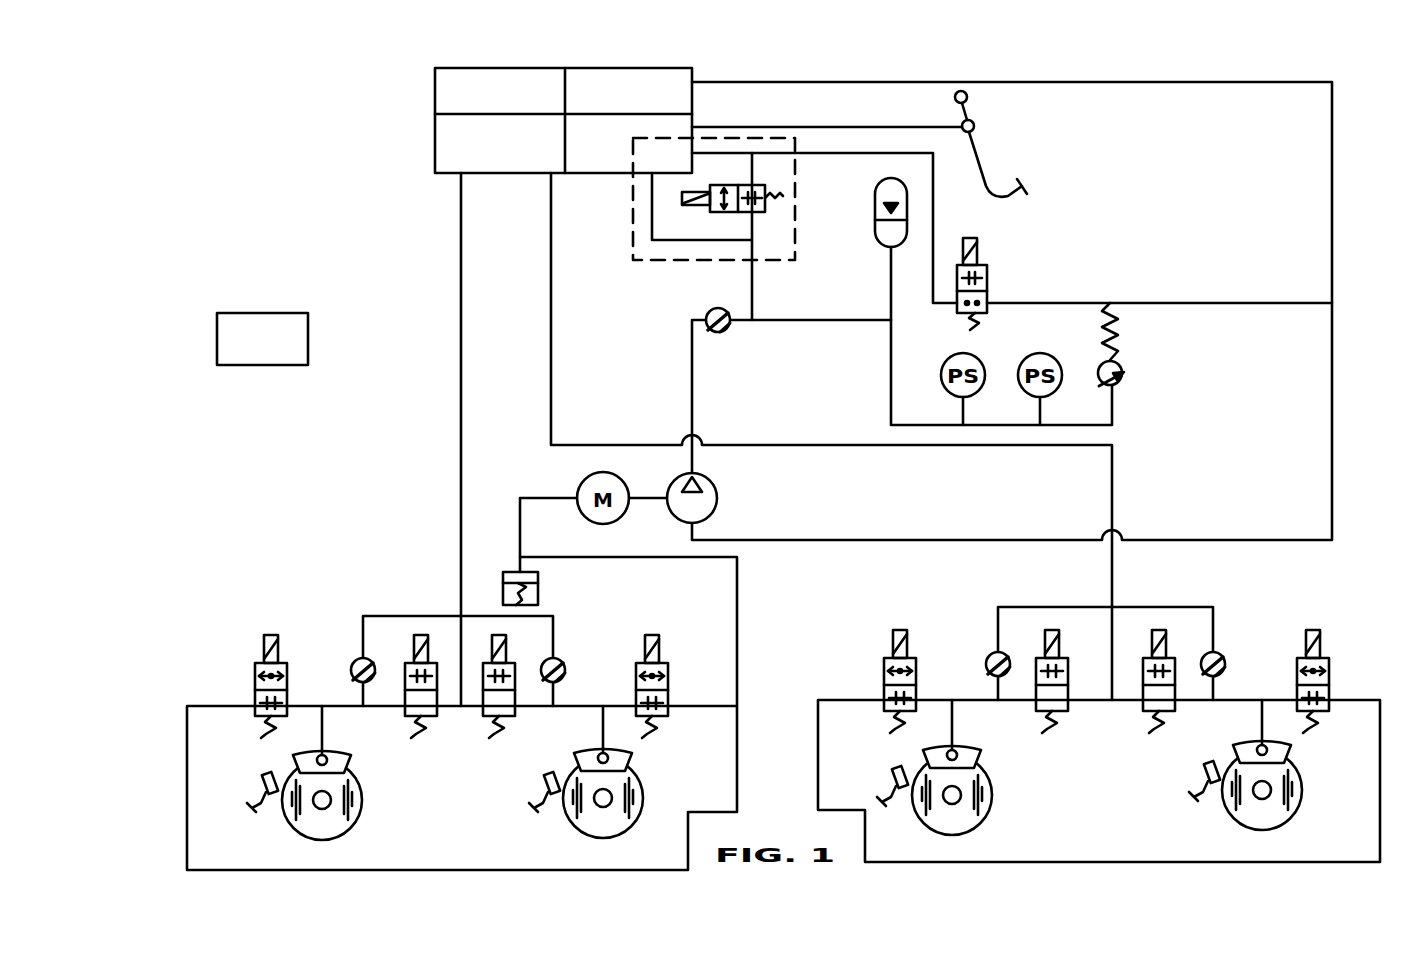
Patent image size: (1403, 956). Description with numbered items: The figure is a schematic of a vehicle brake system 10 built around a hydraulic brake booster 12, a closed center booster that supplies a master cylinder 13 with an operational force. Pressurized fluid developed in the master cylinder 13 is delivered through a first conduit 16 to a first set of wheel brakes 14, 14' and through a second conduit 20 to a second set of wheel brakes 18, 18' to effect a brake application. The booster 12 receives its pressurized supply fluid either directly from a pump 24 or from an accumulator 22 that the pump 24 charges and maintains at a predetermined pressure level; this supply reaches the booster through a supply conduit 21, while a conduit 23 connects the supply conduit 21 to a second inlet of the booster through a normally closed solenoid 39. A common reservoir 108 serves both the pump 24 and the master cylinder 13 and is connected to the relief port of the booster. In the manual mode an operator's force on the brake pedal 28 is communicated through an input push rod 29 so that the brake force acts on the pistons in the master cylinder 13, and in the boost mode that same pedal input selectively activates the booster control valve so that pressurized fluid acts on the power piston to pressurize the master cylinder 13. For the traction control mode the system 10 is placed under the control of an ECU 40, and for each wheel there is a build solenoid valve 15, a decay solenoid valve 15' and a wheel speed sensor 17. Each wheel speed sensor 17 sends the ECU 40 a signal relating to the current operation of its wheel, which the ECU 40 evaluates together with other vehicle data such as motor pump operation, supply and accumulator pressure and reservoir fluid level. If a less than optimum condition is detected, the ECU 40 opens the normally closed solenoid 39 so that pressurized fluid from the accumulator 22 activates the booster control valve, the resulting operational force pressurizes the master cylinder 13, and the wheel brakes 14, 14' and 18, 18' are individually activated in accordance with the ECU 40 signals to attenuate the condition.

The brake system 10 is at (355, 437).
The hydraulic brake booster 12 is at (703, 119).
The master cylinder 13 is at (435, 131).
The wheel brake 14 is at (345, 775).
The wheel brake 14' is at (619, 778).
The build solenoid valve 15 is at (775, 677).
The decay solenoid valve 15' is at (795, 673).
The first conduit 16 is at (461, 487).
The wheel speed sensor 17 is at (263, 777).
The wheel brake 18 is at (975, 768).
The wheel brake 18' is at (1286, 770).
The second conduit 20 is at (551, 318).
The supply conduit 21 is at (752, 283).
The accumulator 22 is at (881, 247).
The conduit 23 is at (752, 166).
The pump 24 is at (717, 498).
The brake pedal 28 is at (986, 166).
The input push rod 29 is at (824, 127).
The solenoid 39 is at (763, 213).
The ECU 40 is at (243, 313).
The reservoir 108 is at (500, 78).